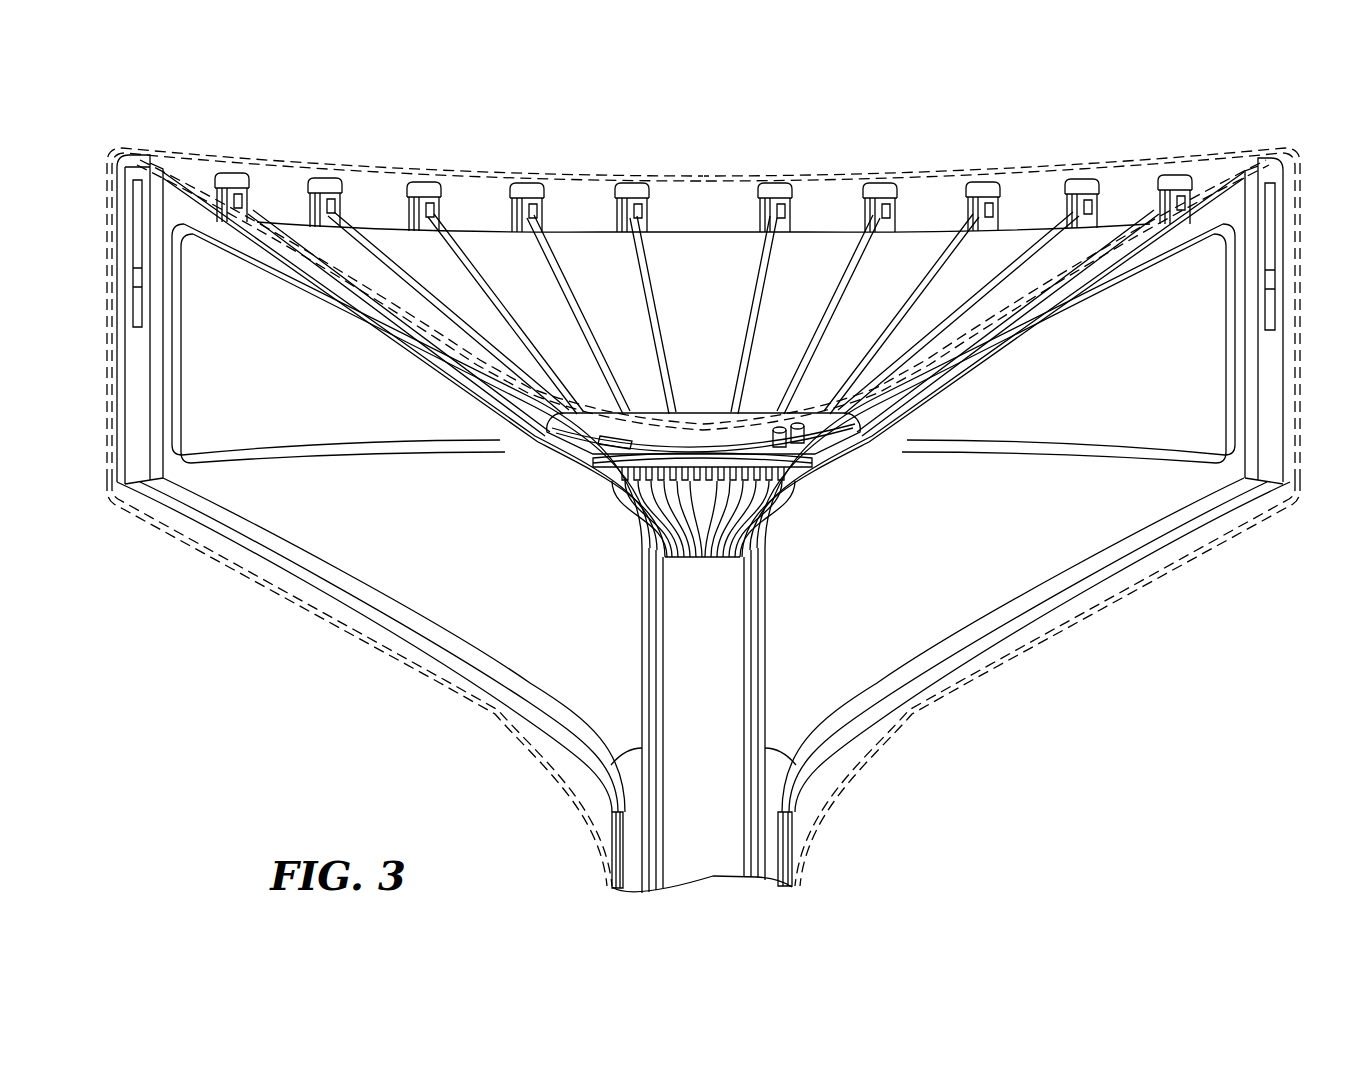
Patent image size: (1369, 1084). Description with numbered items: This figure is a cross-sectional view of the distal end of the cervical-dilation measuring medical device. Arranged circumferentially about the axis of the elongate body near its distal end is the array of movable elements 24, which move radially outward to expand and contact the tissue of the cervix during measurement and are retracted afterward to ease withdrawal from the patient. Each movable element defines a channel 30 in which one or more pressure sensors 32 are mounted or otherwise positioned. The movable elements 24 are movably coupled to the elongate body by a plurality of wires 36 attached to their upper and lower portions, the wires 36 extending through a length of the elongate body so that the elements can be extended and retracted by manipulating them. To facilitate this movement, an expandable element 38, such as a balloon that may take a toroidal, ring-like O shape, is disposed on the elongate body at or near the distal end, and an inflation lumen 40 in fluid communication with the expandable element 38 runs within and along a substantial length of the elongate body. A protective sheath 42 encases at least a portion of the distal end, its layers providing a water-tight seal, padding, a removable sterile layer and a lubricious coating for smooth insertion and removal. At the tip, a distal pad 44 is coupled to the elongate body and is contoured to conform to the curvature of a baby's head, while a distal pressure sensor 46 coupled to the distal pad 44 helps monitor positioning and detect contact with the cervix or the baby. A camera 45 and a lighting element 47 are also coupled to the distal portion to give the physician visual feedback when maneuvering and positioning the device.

The array of movable elements 24 is at (427, 188).
The channel 30 is at (1273, 233).
The pressure sensor 32 is at (135, 280).
The wires 36 is at (633, 272).
The expandable element 38 is at (920, 232).
The inflation lumen 40 is at (767, 860).
The protective sheath 42 is at (1173, 568).
The distal pad 44 is at (707, 410).
The camera 45 is at (781, 448).
The distal pressure sensor 46 is at (603, 447).
The lighting element 47 is at (803, 440).